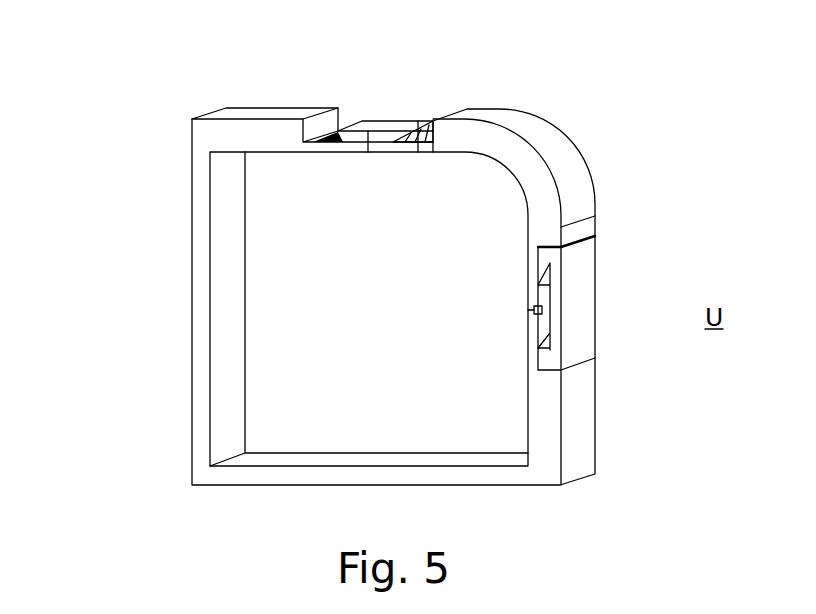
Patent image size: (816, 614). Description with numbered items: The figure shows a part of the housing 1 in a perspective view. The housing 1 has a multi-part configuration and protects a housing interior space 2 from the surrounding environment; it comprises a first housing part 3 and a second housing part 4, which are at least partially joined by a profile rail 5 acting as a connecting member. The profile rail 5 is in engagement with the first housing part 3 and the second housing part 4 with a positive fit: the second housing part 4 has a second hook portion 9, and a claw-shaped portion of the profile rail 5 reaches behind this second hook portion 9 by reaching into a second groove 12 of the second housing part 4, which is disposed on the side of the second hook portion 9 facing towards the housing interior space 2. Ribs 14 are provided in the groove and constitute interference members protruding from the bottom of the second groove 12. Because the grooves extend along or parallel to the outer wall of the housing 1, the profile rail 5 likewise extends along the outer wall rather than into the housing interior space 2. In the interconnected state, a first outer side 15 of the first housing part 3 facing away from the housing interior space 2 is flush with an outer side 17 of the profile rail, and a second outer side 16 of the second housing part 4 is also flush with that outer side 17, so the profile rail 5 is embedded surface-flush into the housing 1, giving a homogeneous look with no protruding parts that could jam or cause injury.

The housing 1 is at (137, 114).
The housing interior space 2 is at (377, 303).
The first housing part 3 is at (250, 125).
The second housing part 4 is at (557, 162).
The profile rail 5 is at (577, 280).
The second hook portion 9 is at (391, 124).
The second groove 12 is at (418, 162).
The ribs 14 is at (418, 114).
The first outer side 15 is at (588, 415).
The second outer side 16 is at (588, 228).
The outer side of the profile rail 17 is at (588, 330).